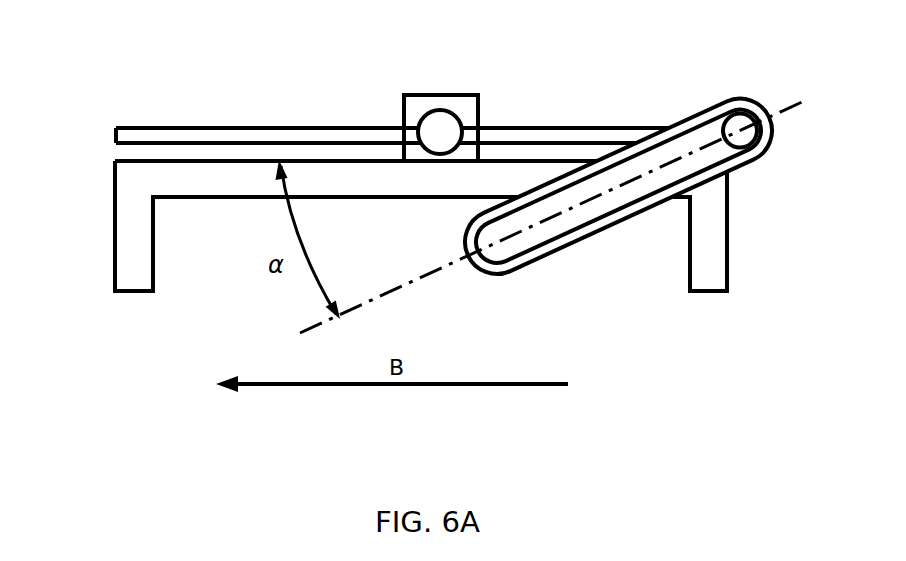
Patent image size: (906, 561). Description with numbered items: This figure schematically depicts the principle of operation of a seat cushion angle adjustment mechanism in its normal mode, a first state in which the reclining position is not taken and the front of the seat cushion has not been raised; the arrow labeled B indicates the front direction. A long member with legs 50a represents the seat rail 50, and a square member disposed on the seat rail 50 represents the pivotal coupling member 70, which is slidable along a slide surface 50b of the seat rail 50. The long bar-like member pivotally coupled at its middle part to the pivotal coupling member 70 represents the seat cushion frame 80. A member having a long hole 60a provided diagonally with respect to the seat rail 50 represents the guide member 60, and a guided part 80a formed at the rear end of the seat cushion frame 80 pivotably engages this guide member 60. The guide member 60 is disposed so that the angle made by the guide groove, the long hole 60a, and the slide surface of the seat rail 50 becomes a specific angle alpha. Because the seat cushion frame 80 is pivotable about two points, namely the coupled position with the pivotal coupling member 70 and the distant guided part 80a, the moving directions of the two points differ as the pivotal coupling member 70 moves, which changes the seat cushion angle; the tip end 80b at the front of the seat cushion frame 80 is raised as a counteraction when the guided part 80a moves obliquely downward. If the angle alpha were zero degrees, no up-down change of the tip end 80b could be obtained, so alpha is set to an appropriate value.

The seat rail 50 is at (115, 204).
The legs 50a is at (128, 292).
The slide surface 50b is at (187, 148).
The guide member 60 is at (638, 216).
The long hole 60a is at (545, 228).
The pivotal coupling member 70 is at (443, 94).
The seat cushion frame 80 is at (245, 127).
The guided part 80a is at (731, 111).
The tip end 80b is at (115, 128).